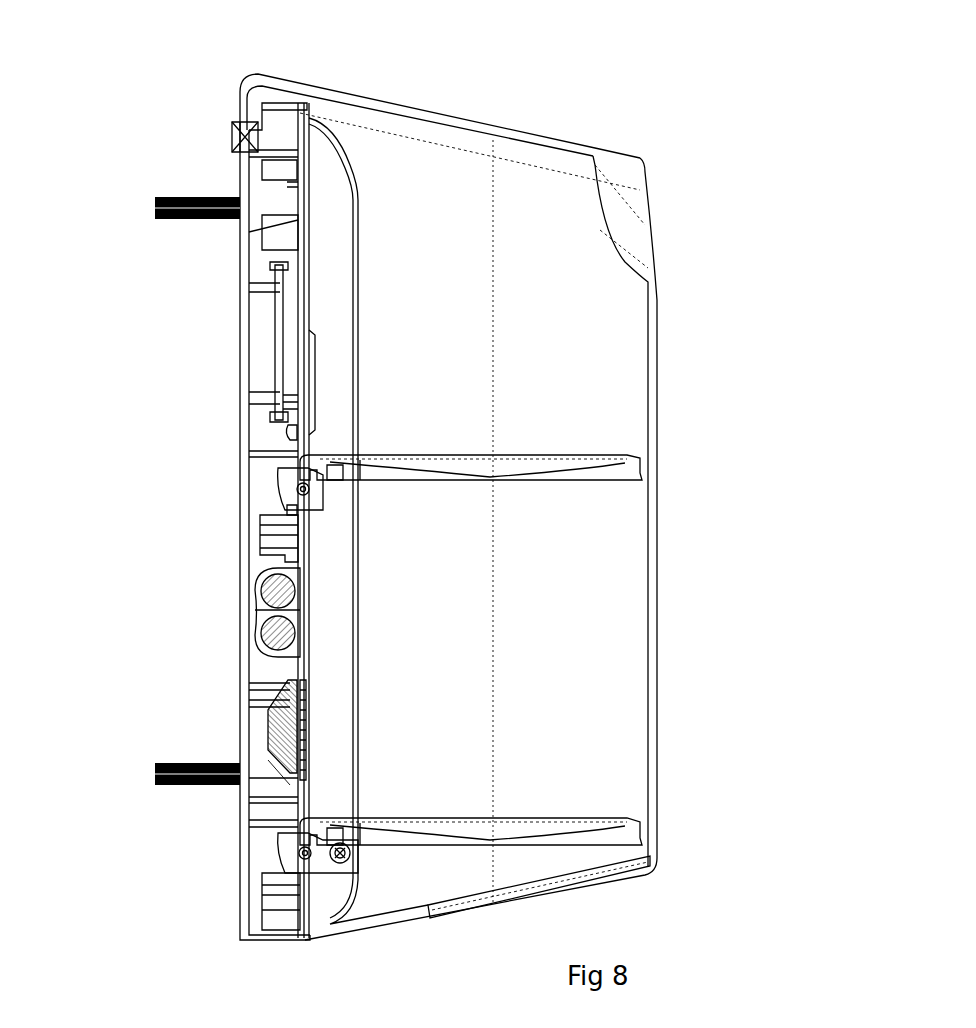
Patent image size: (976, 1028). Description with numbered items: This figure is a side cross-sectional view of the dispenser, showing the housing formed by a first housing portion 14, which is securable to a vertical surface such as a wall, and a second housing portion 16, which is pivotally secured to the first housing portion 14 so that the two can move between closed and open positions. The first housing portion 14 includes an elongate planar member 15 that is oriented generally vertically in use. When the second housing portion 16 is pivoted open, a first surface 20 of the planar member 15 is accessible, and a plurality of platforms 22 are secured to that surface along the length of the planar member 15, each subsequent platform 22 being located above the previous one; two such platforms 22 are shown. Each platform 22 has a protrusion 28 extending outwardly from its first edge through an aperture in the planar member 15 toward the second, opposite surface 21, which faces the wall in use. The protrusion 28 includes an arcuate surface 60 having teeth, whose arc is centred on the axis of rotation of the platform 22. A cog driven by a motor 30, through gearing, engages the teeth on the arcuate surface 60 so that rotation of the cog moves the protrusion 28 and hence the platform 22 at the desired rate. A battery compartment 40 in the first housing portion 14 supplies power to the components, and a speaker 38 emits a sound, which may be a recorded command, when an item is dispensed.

The first housing portion 14 is at (222, 148).
The elongate planar member 15 is at (300, 215).
The second housing portion 16 is at (486, 122).
The first surface 20 is at (302, 236).
The second surface 21 is at (300, 240).
The platform 22 is at (528, 460).
The protrusion 28 is at (300, 475).
The motor 30 is at (265, 555).
The speaker 38 is at (275, 720).
The battery compartment 40 is at (305, 597).
The arcuate surface 60 is at (290, 490).